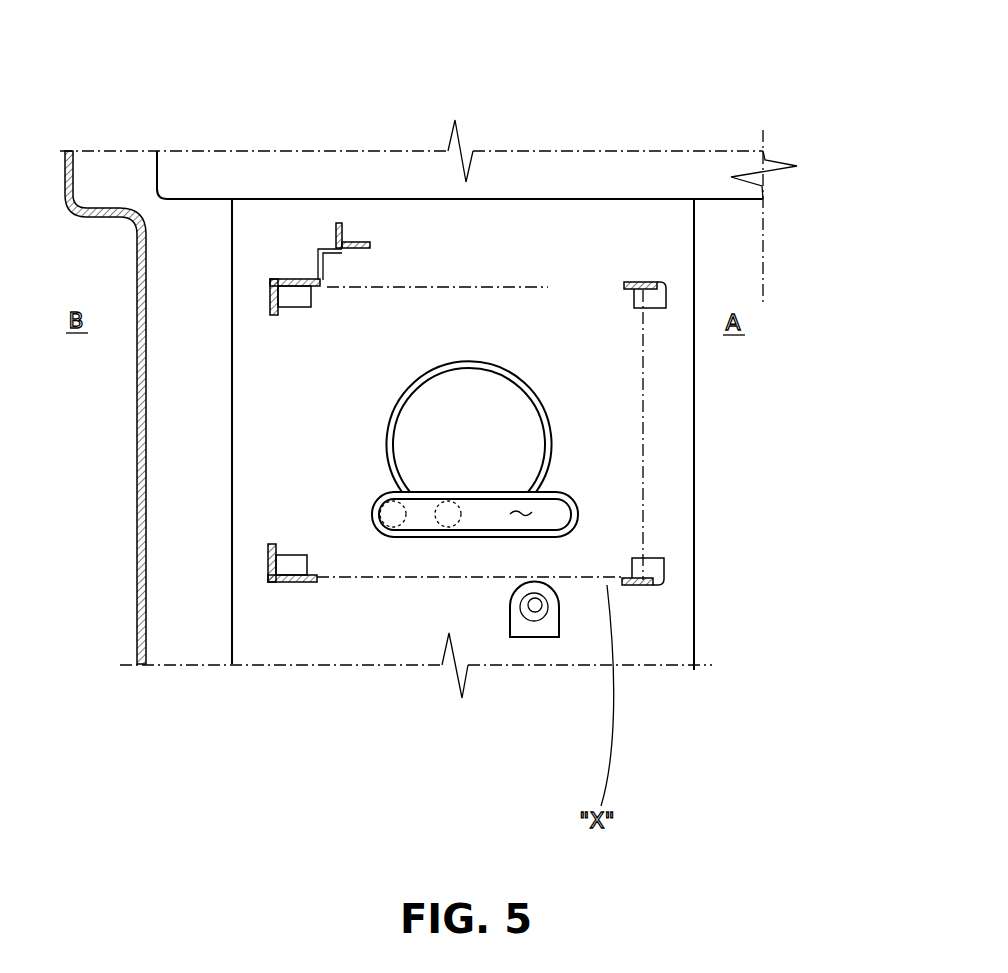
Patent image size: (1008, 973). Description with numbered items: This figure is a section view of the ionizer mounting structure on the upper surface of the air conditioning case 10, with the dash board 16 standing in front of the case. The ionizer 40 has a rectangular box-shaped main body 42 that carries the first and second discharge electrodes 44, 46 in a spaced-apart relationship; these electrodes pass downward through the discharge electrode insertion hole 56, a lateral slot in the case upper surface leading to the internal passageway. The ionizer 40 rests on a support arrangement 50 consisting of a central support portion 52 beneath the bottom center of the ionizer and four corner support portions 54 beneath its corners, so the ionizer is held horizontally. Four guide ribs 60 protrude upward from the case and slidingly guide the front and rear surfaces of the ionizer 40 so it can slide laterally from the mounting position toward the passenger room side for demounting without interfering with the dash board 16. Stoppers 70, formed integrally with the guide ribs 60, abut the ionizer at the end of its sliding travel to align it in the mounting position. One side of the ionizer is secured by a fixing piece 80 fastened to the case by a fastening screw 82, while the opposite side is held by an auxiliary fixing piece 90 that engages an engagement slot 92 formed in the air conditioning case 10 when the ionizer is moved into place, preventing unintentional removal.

The air conditioning case 10 is at (735, 624).
The dash board 16 is at (137, 475).
The ionizer 40 is at (461, 240).
The main body 42 is at (548, 287).
The first discharge electrode 44 is at (393, 527).
The second discharge electrode 46 is at (448, 527).
The support arrangement 50 is at (517, 514).
The central support portion 52 is at (553, 440).
The corner support portions 54 is at (297, 306).
The discharge electrode insertion hole 56 is at (520, 516).
The guide ribs 60 is at (292, 279).
The stoppers 70 is at (270, 296).
The fixing piece 80 is at (534, 637).
The fastening screw 82 is at (538, 612).
The auxiliary fixing piece 90 is at (358, 268).
The engagement slot 92 is at (331, 240).